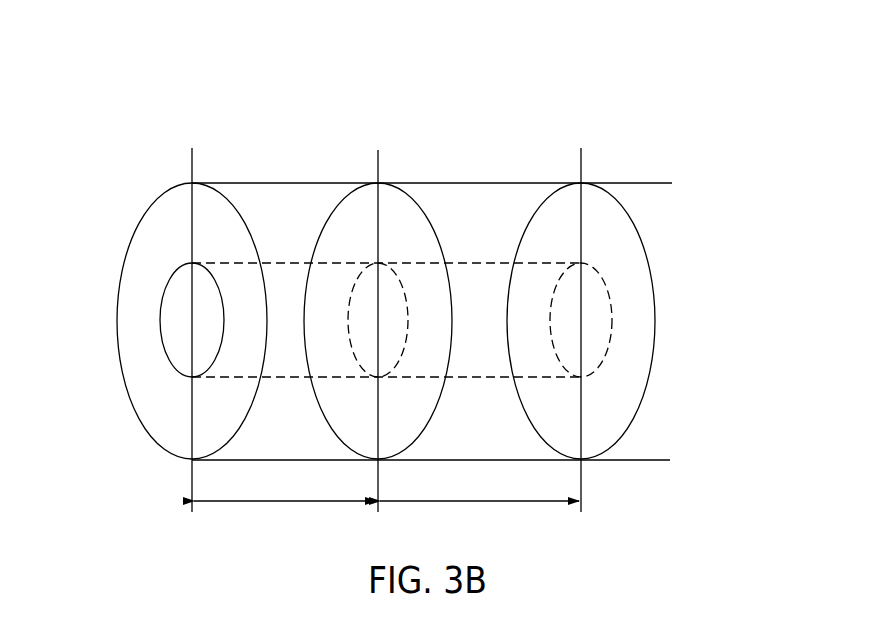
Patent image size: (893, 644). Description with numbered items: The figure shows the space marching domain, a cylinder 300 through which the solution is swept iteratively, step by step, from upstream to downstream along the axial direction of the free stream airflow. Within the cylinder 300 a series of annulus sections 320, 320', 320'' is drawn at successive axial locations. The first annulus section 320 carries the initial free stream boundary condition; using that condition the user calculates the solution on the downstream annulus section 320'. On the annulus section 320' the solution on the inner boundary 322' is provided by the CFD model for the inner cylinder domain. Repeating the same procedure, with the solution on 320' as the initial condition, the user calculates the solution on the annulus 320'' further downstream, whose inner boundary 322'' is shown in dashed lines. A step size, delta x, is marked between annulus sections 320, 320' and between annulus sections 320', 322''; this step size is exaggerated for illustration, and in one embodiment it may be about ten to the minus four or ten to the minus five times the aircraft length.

The cylinder 300 is at (630, 77).
The first annulus section 320 is at (162, 313).
The downstream annulus section 320' is at (378, 279).
The inner boundary 322' is at (424, 238).
The annulus section further downstream 320'' is at (623, 308).
The inner boundary of the further downstream annulus section 322'' is at (652, 325).